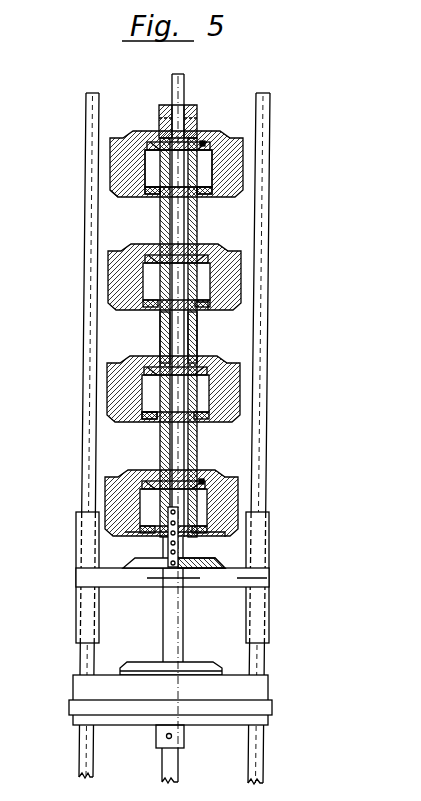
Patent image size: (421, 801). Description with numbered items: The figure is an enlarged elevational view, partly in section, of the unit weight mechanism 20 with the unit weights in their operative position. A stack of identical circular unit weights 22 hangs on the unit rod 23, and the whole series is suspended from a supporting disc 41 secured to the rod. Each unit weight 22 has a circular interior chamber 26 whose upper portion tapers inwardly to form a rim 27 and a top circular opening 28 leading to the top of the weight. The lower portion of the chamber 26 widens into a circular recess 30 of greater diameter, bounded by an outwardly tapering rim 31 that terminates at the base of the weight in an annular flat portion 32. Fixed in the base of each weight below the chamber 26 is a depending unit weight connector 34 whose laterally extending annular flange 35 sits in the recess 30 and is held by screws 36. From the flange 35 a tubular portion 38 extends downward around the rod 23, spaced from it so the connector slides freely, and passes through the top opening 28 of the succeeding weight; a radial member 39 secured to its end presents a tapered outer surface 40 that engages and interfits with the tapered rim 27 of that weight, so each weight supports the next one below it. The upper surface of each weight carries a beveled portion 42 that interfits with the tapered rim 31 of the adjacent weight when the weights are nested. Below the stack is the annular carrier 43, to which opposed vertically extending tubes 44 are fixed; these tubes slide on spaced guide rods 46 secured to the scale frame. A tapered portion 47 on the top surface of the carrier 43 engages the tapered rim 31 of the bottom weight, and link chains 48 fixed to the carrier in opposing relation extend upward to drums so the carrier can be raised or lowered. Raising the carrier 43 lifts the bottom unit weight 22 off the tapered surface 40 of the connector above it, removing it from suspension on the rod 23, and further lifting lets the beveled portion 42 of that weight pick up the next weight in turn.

The unit weight mechanism 20 is at (277, 96).
The unit weight 22 is at (245, 142).
The unit rod 23 is at (175, 232).
The interior chamber 26 is at (210, 162).
The rim 27 is at (205, 137).
The top circular opening 28 is at (196, 130).
The circular recess 30 is at (232, 193).
The tapering rim 31 is at (222, 199).
The annular flat portion 32 is at (110, 200).
The unit weight connector 34 is at (197, 341).
The annular flange 35 is at (200, 308).
The screws 36 is at (242, 292).
The tubular portion 38 is at (160, 338).
The radial member 39 is at (226, 381).
The tapered outer surface 40 is at (222, 476).
The supporting disc 41 is at (162, 118).
The beveled portion 42 is at (125, 470).
The carrier 43 is at (270, 578).
The tubes 44 is at (85, 612).
The guide rods 46 is at (92, 403).
The tapered portion 47 is at (230, 566).
The link chains 48 is at (168, 548).